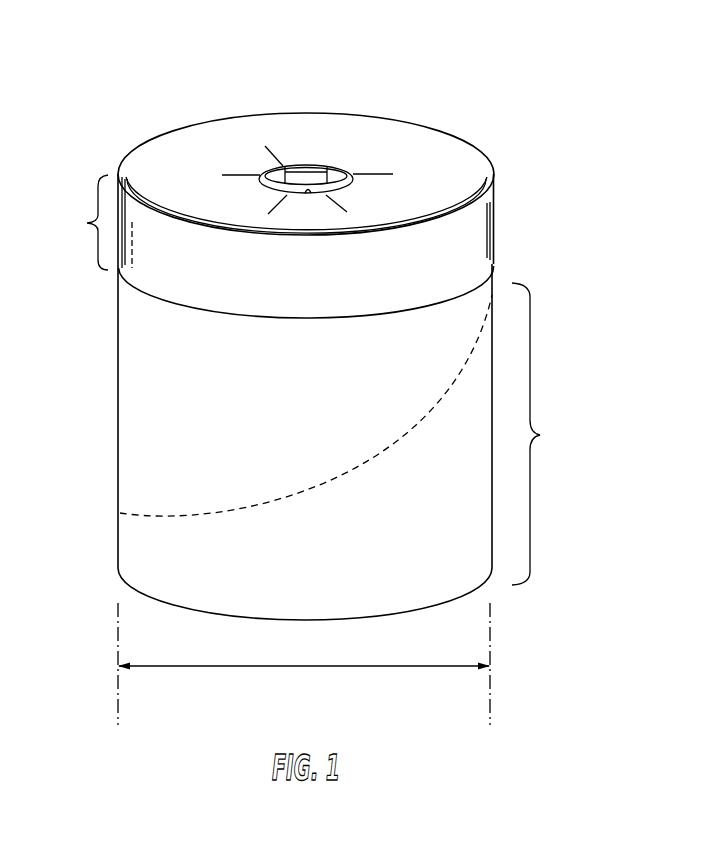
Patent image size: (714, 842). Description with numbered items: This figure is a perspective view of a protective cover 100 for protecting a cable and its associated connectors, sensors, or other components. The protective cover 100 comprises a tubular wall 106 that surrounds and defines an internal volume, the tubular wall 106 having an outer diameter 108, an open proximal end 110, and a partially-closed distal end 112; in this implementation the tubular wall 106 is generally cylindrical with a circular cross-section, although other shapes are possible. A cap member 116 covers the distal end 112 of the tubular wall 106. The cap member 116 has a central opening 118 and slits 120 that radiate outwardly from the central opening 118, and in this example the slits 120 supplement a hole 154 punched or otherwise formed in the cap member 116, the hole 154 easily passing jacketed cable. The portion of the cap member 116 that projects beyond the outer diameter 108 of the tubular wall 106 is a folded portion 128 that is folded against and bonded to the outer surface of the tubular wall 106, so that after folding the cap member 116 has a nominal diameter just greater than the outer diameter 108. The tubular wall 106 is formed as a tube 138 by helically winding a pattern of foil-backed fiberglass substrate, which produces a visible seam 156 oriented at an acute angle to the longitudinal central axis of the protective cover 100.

The protective cover 100 is at (495, 76).
The tubular wall 106 is at (320, 432).
The outer diameter 108 is at (423, 667).
The proximal end 110 is at (116, 568).
The distal end 112 is at (138, 126).
The cap member 116 is at (495, 229).
The central opening 118 is at (340, 175).
The slits 120 is at (282, 167).
The folded portion 128 is at (81, 222).
The tube 138 is at (547, 434).
The hole 154 is at (310, 196).
The visible seam 156 is at (402, 451).